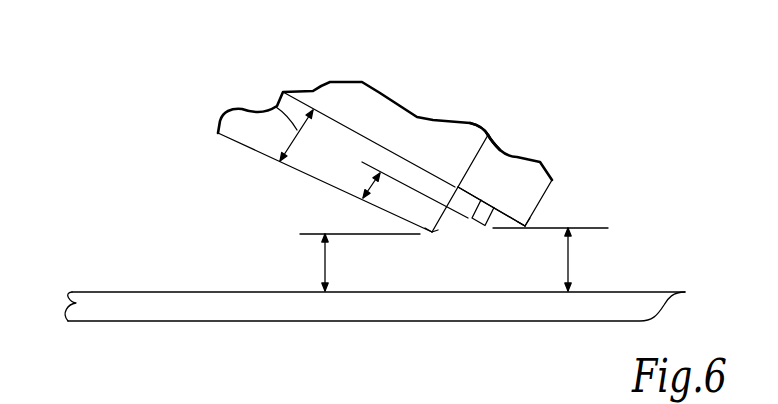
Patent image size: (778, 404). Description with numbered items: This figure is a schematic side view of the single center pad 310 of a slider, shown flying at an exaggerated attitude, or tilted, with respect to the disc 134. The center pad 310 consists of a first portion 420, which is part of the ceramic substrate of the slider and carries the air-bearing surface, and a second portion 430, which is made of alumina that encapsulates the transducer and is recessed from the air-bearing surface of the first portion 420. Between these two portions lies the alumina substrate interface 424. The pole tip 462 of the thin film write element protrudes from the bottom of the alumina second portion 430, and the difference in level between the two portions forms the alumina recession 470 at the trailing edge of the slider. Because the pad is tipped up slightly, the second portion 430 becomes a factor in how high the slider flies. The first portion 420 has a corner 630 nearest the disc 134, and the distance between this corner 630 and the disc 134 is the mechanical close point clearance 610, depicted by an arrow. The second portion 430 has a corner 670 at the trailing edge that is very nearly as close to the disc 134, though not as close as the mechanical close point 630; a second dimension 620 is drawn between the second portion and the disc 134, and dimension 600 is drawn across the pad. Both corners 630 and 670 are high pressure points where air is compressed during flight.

The disc 134 is at (67, 298).
The single center pad 310 is at (413, 133).
The first portion 420 is at (432, 135).
The alumina substrate interface 424 is at (480, 132).
The second portion 430 is at (520, 180).
The pole tip 462 is at (489, 226).
The alumina recession 470 is at (276, 107).
The pad height 600 is at (372, 183).
The mechanical close point clearance 610 is at (325, 262).
The trailing edge fly height 620 is at (570, 258).
The corner 630 is at (432, 233).
The corner 670 is at (524, 228).